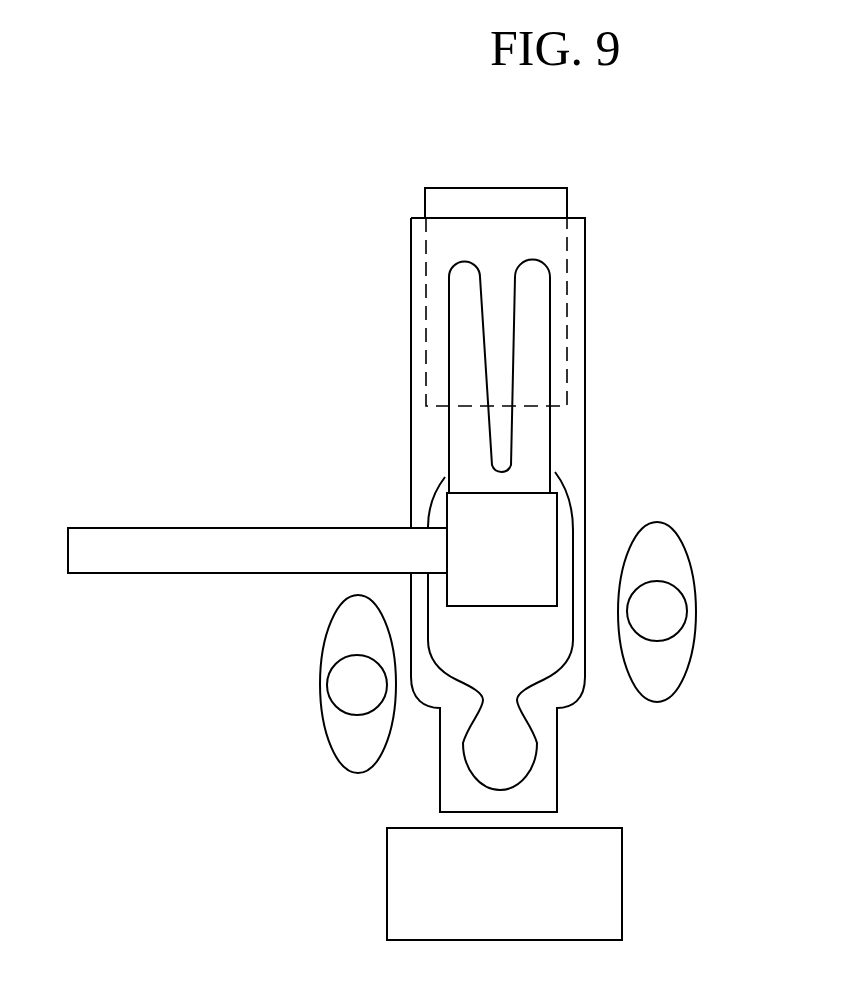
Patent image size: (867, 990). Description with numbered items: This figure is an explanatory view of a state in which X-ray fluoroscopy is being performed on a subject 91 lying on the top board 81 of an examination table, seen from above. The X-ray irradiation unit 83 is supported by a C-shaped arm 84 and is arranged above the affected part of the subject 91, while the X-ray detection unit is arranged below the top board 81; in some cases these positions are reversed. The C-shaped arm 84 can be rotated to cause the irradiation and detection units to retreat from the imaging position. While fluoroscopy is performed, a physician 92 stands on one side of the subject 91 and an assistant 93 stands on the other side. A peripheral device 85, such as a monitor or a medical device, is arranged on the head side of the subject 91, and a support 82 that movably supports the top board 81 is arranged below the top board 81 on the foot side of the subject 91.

The top board 81 is at (573, 423).
The support 82 is at (552, 204).
The X-ray irradiation unit 83 is at (538, 533).
The C-shaped arm 84 is at (238, 545).
The peripheral device 85 is at (408, 888).
The subject 91 is at (517, 755).
The physician 92 is at (357, 743).
The assistant 93 is at (660, 683).